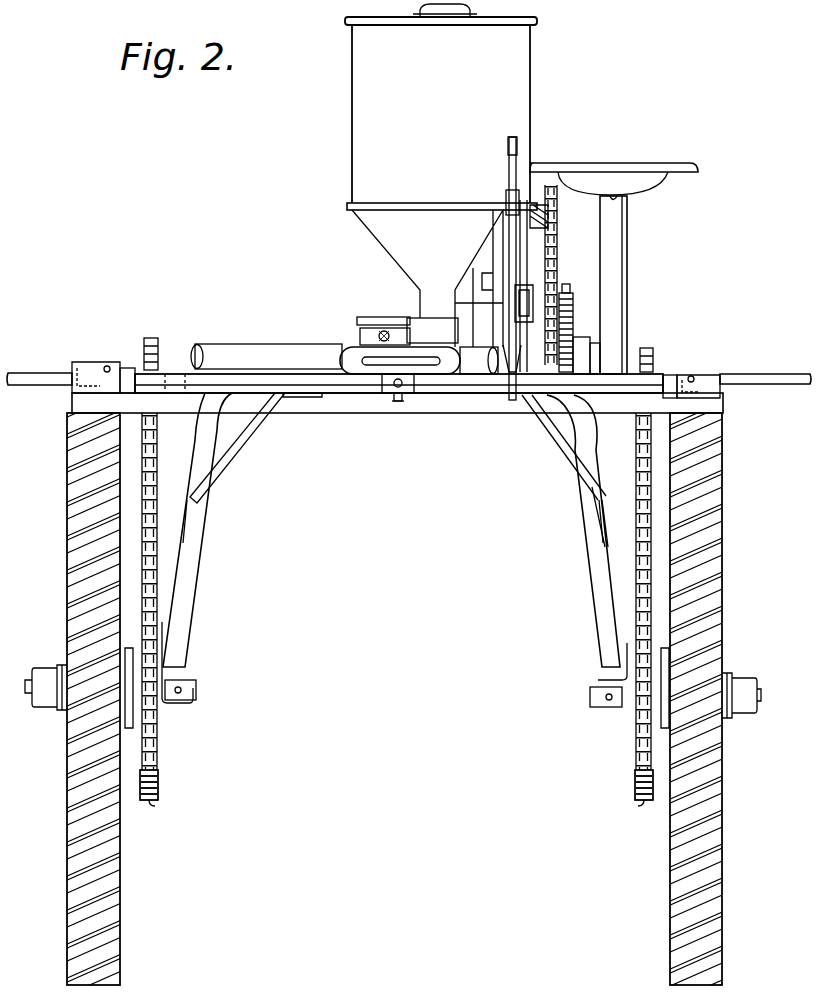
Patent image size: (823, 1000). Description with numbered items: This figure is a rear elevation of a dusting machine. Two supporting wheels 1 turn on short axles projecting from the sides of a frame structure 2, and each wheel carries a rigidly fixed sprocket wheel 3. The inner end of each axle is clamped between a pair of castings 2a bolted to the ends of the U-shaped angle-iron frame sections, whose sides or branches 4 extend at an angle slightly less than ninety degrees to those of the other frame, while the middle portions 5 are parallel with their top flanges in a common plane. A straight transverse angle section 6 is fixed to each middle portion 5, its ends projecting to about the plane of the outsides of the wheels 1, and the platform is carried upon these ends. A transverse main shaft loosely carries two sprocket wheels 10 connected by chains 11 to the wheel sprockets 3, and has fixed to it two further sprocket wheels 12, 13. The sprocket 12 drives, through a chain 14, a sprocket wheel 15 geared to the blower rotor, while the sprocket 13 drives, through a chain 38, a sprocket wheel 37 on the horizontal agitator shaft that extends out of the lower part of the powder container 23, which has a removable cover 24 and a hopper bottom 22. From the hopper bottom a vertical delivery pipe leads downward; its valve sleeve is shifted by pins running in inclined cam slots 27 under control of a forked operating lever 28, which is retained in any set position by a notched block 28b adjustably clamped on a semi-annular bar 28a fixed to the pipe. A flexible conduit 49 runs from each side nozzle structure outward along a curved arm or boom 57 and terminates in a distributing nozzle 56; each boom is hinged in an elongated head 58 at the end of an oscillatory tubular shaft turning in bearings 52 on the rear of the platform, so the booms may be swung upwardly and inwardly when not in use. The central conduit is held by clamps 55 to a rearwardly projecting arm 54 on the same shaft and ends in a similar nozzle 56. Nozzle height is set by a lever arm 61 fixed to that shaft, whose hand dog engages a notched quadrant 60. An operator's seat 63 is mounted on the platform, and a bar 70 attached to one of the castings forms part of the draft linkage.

The supporting wheels 1 is at (718, 800).
The frame structure 2 is at (190, 588).
The castings 2a is at (598, 665).
The sprocket wheel 3 is at (640, 805).
The sides or branches 4 is at (582, 517).
The middle portions 5 is at (330, 406).
The angle section 6 is at (624, 406).
The sprocket wheels 10 is at (652, 355).
The chains 11 is at (640, 470).
The sprocket wheel 12 is at (575, 368).
The sprocket wheel 13 is at (545, 380).
The chain 14 is at (568, 320).
The sprocket wheel 15 is at (568, 290).
The hopper bottom 22 is at (378, 222).
The powder container 23 is at (522, 77).
The cover 24 is at (538, 22).
The cam slots 27 is at (432, 312).
The forked operating lever 28 is at (378, 328).
The semi-annular bar 28a is at (362, 338).
The notched block 28b is at (400, 320).
The sprocket wheel 37 is at (552, 215).
The chain 38 is at (557, 262).
The conduit 49 is at (478, 360).
The bearings 52 is at (127, 368).
The arm 54 is at (395, 390).
The clamps 55 is at (404, 396).
The distributing nozzle 56 is at (345, 360).
The arm or boom 57 is at (782, 384).
The elongated head 58 is at (715, 381).
The notched quadrant 60 is at (550, 333).
The lever arm 61 is at (509, 140).
The operator's seat 63 is at (606, 165).
The bar 70 is at (590, 697).